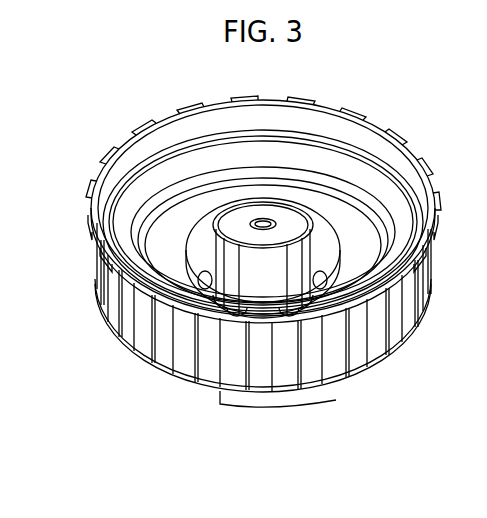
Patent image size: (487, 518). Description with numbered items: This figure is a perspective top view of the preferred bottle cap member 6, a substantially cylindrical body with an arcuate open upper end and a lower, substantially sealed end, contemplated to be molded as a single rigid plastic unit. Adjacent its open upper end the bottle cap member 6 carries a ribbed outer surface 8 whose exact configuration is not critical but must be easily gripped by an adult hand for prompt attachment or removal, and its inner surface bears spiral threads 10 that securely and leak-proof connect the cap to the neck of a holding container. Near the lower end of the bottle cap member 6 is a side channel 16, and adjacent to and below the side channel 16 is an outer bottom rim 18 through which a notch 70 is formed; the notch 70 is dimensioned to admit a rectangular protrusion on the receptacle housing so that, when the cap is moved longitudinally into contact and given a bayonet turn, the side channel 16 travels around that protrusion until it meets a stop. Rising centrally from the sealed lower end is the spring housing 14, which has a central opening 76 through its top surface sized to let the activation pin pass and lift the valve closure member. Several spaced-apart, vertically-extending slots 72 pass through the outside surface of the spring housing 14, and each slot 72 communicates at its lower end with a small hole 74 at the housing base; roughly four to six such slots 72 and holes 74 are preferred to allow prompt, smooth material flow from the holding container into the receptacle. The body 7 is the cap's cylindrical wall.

The bottle cap member 6 is at (133, 99).
The cap body 7 is at (292, 307).
The ribbed outer surface 8 is at (420, 157).
The spiral threads 10 is at (317, 138).
The spring housing 14 is at (216, 224).
The side channel 16 is at (310, 392).
The outer bottom rim 18 is at (357, 388).
The notch 70 is at (200, 397).
The vertically-extending slots 72 is at (238, 278).
The small hole 74 is at (202, 288).
The central opening 76 is at (318, 224).